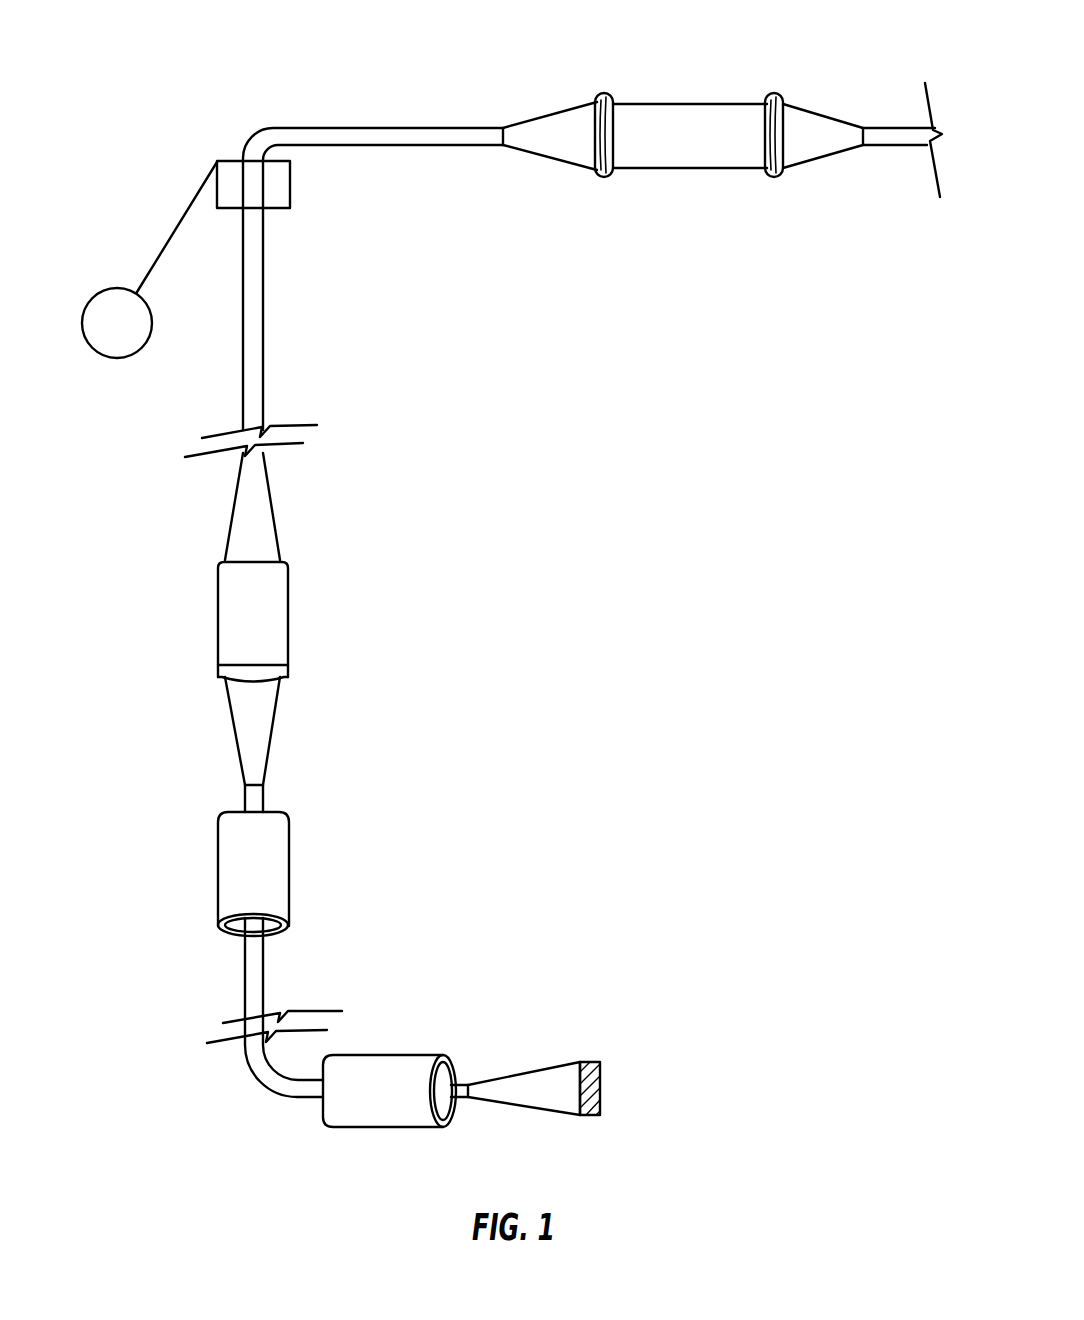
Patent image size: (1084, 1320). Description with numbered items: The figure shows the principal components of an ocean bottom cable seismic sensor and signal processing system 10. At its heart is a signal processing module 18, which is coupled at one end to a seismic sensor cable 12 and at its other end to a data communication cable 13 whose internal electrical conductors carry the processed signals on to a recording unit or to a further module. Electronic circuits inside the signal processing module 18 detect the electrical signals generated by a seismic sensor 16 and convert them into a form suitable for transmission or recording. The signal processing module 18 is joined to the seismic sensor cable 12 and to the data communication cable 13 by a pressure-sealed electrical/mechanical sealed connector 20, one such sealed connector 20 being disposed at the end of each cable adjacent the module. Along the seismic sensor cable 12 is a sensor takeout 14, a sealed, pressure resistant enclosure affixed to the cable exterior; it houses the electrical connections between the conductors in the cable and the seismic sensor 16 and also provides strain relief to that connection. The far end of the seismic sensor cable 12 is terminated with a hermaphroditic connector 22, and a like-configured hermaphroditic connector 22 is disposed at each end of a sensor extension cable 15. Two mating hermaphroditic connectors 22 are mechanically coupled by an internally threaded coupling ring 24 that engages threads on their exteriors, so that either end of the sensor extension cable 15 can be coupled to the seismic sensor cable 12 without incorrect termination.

The ocean bottom cable seismic sensor and signal processing system 10 is at (263, 52).
The seismic sensor cable 12 is at (330, 128).
The data communication cable 13 is at (915, 125).
The sensor takeout 14 is at (290, 187).
The sensor extension cable 15 is at (268, 975).
The seismic sensor 16 is at (108, 290).
The signal processing module 18 is at (673, 103).
The sealed connector 20 is at (543, 160).
The hermaphroditic connector 22 is at (277, 523).
The threaded coupling ring 24 is at (216, 593).